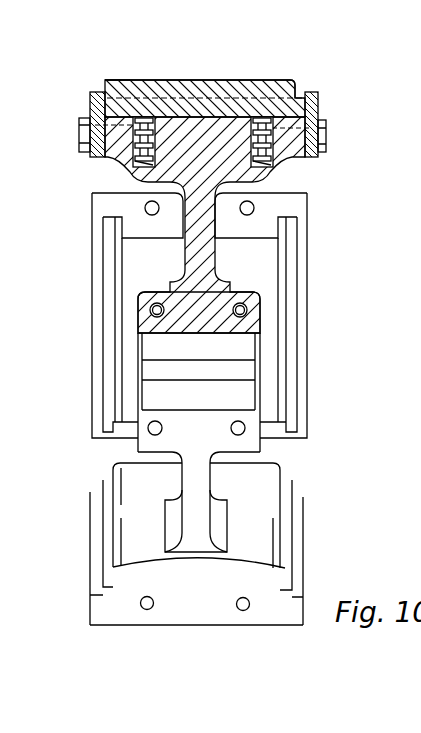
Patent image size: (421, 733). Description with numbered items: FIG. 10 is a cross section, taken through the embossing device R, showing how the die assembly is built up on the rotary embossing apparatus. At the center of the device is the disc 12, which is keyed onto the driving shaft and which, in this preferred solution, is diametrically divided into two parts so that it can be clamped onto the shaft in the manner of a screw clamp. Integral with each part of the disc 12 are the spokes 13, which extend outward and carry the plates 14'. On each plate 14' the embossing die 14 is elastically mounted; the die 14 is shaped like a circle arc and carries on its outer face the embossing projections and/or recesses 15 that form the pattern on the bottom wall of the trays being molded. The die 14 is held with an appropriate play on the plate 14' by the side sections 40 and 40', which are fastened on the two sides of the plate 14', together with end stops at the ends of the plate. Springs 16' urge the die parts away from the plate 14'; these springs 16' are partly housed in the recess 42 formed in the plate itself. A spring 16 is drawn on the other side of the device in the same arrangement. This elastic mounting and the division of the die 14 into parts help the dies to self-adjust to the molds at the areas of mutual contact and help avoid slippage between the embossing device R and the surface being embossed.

The embossing device R is at (106, 78).
The disc 12 is at (262, 313).
The spoke 13 is at (210, 227).
The die 14 is at (202, 80).
The plate 14' is at (205, 334).
The embossing projections and/or recesses 15 is at (272, 82).
The spring 16 is at (304, 150).
The spring 16' is at (108, 154).
The side section 40 is at (96, 124).
The side section 40' is at (311, 124).
The recess 42 is at (140, 183).